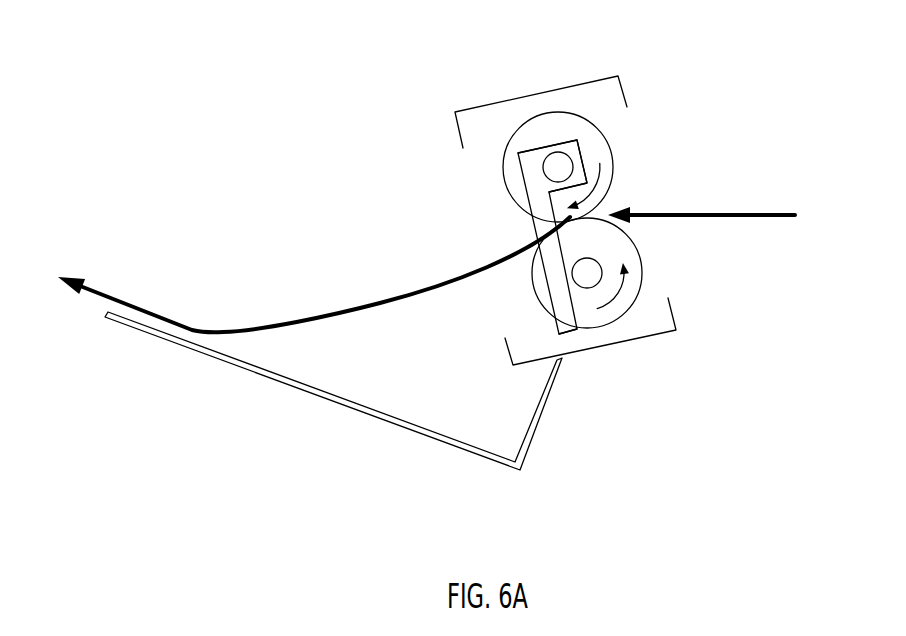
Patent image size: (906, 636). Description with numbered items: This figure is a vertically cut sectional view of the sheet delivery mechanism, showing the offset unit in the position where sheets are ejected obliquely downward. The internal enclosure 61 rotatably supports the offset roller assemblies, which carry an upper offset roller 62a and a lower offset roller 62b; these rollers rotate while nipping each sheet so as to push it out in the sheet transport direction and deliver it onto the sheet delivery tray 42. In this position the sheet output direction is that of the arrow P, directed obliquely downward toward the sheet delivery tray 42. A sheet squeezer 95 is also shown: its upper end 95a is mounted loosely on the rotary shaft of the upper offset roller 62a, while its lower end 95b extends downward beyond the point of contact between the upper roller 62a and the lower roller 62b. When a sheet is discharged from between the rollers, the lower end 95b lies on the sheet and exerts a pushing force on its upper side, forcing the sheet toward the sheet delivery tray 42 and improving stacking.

The internal enclosure 61 is at (592, 77).
The upper offset roller 62a is at (603, 165).
The lower offset roller 62b is at (635, 288).
The sheet squeezer 95 is at (535, 280).
The upper end of sheet squeezer 95a is at (532, 173).
The lower end of sheet squeezer 95b is at (567, 330).
The sheet delivery tray 42 is at (378, 412).
The arrow P is at (430, 288).